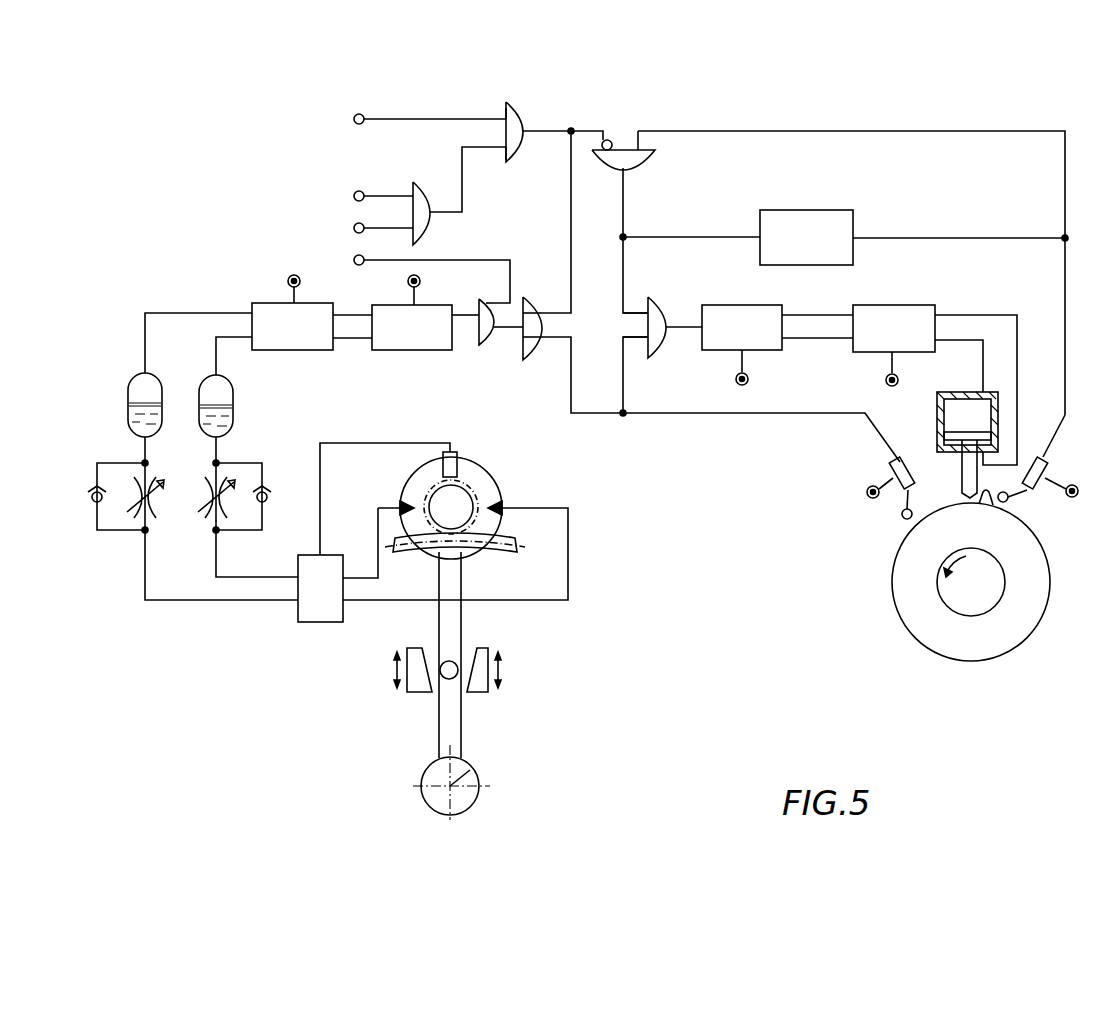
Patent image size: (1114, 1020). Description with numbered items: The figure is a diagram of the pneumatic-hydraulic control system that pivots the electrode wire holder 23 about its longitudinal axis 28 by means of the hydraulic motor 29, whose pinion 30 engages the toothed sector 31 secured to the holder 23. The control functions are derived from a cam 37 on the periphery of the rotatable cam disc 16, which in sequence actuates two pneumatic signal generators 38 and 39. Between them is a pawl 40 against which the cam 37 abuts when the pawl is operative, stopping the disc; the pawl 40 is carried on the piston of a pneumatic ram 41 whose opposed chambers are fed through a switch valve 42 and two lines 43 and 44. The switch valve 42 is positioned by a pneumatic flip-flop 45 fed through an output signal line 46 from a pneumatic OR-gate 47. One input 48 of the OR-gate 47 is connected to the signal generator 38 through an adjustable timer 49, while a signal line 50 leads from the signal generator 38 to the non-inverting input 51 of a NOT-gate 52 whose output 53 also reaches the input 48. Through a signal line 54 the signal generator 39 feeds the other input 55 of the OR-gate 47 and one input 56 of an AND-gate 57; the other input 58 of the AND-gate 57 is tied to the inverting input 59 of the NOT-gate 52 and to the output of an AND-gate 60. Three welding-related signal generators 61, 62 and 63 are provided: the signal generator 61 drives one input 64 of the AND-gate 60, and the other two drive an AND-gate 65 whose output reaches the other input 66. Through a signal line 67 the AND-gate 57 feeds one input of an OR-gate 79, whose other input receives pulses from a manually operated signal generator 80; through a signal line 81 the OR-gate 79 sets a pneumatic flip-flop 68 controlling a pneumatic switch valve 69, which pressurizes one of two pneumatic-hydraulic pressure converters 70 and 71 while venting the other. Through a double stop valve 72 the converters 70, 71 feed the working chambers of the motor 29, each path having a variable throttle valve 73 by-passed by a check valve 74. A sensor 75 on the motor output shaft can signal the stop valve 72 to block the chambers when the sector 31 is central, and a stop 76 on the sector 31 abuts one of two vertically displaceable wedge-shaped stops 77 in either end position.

The cam disc 16 is at (1040, 590).
The holder 23 is at (472, 794).
The longitudinal axis 28 is at (470, 770).
The hydraulic motor 29 is at (418, 483).
The pinion 30 is at (470, 490).
The toothed sector 31 is at (455, 582).
The cam 37 is at (985, 505).
The pneumatic signal generator 38 is at (1045, 465).
The pneumatic signal generator 39 is at (890, 466).
The pawl 40 is at (965, 470).
The pneumatic ram 41 is at (937, 410).
The switch valve 42 is at (890, 310).
The line 43 is at (972, 342).
The line 44 is at (1017, 352).
The pneumatic flip-flop 45 is at (760, 310).
The output signal line 46 is at (683, 330).
The pneumatic OR-gate 47 is at (662, 318).
The input 48 is at (642, 308).
The adjustable timer 49 is at (828, 210).
The signal line 50 is at (925, 131).
The non-inverting input 51 is at (655, 150).
The NOT-gate 52 is at (640, 160).
The output 53 is at (620, 170).
The signal line 54 is at (750, 413).
The input 55 is at (640, 343).
The input 56 is at (548, 353).
The AND-gate 57 is at (535, 340).
The input 58 is at (545, 300).
The inverting input 59 is at (610, 140).
The AND-gate 60 is at (524, 115).
The signal generator 61 is at (363, 114).
The signal generator 62 is at (363, 191).
The signal generator 63 is at (363, 223).
The input 64 is at (505, 112).
The AND-gate 65 is at (428, 230).
The input 66 is at (507, 160).
The signal line 67 is at (488, 340).
The pneumatic flip-flop 68 is at (398, 345).
The pneumatic switch valve 69 is at (318, 345).
The pneumatic-hydraulic pressure converter 70 is at (150, 388).
The pneumatic-hydraulic pressure converter 71 is at (228, 398).
The double stop valve 72 is at (317, 622).
The variable throttle valve 73 is at (205, 505).
The check valve 74 is at (94, 506).
The sensor 75 is at (458, 458).
The stop 76 is at (452, 662).
The wedge-shaped stop 77 is at (422, 692).
The OR-gate 79 is at (487, 294).
The manually operated signal generator 80 is at (372, 245).
The signal line 81 is at (467, 318).